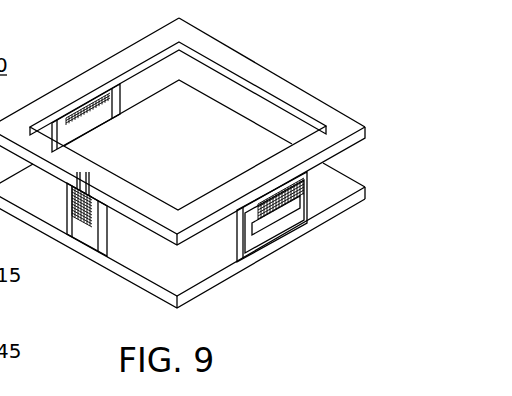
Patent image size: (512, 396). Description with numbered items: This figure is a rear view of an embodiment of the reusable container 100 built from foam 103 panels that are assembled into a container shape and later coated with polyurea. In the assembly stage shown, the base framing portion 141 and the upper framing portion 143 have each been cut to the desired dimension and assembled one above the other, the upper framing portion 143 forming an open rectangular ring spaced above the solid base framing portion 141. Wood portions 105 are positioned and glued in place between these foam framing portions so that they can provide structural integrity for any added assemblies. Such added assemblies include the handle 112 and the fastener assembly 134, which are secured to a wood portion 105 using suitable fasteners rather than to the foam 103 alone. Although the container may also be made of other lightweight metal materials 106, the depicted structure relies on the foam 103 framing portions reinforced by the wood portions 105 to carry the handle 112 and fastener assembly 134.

The reusable container 100 is at (197, 172).
The foam 103 is at (160, 38).
The wood portion 105 is at (237, 237).
The lightweight metal material 106 is at (93, 113).
The handle 112 is at (283, 202).
The fastener assembly 134 is at (68, 204).
The base framing portion 141 is at (316, 190).
The upper framing portion 143 is at (233, 62).